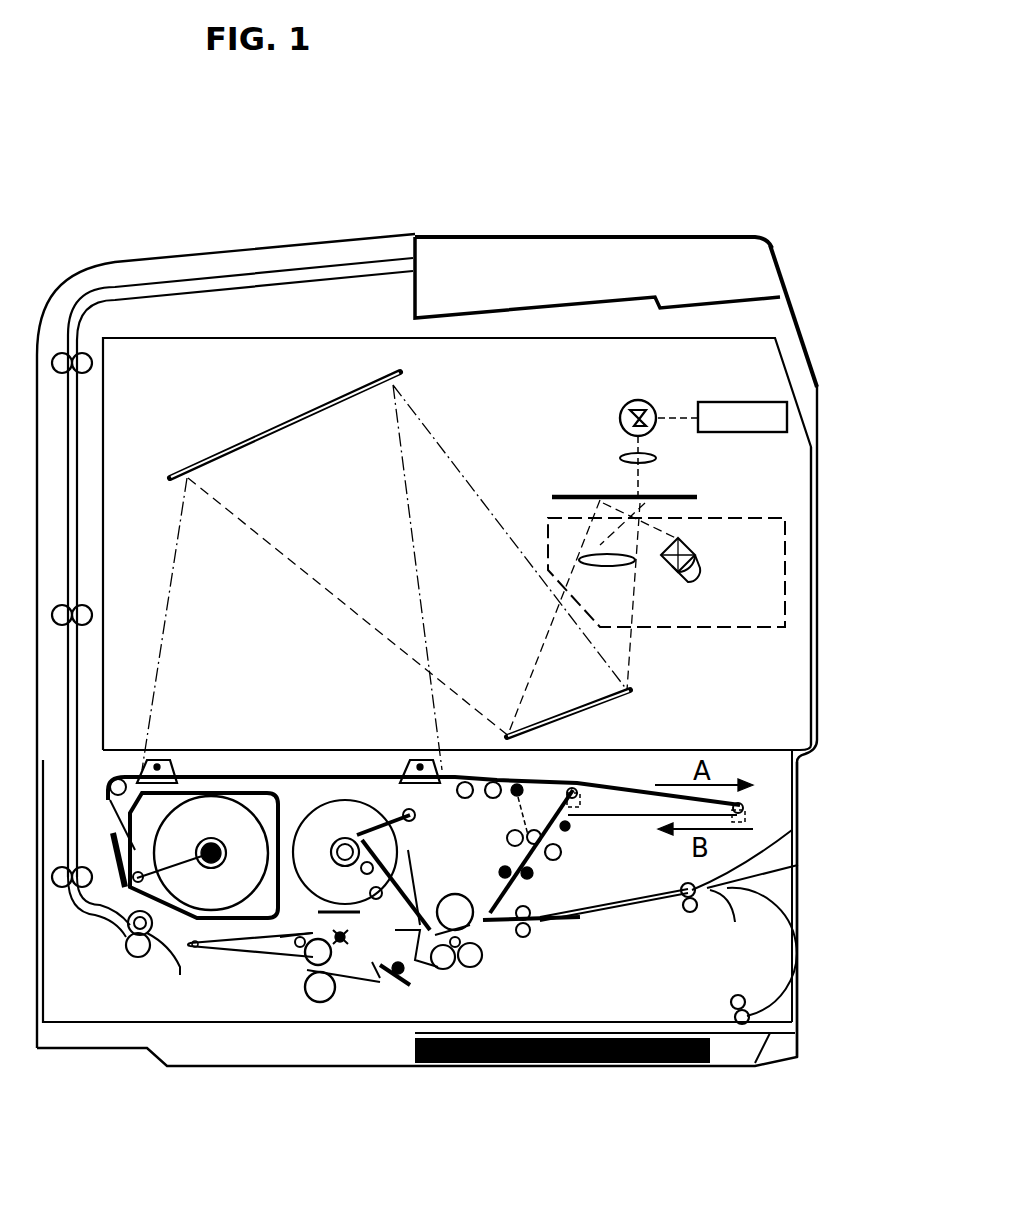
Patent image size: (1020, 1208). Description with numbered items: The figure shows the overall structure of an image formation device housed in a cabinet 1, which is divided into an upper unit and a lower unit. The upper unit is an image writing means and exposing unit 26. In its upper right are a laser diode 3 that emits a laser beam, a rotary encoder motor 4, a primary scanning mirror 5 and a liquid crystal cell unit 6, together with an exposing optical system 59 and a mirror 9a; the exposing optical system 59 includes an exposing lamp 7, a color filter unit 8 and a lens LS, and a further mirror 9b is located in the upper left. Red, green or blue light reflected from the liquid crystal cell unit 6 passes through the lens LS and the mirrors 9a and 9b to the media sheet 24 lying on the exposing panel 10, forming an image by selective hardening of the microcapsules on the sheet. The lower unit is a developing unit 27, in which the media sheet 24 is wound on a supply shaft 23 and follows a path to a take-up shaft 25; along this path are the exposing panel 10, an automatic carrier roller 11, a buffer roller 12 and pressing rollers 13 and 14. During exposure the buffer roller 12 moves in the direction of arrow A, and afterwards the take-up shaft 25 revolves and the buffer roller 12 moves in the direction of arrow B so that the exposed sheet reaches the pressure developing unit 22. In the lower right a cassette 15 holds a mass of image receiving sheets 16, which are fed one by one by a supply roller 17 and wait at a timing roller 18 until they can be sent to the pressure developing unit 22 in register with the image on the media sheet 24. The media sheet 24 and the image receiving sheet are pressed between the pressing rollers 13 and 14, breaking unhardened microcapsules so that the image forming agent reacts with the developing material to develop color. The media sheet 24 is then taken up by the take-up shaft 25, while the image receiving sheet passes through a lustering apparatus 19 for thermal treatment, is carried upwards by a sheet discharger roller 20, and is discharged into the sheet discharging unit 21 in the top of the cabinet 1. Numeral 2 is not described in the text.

The cabinet 1 is at (800, 316).
The laser light source 2 is at (757, 402).
The laser diode 3 is at (684, 412).
The rotary encoder motor 4 is at (634, 400).
The primary scanning mirror 5 is at (620, 418).
The liquid crystal cell unit 6 is at (690, 495).
The exposing lamp 7 is at (695, 572).
The color filter unit 8 is at (692, 553).
The mirror 9a is at (632, 691).
The mirror 9b is at (405, 372).
The exposing panel 10 is at (363, 770).
The automatic carrier roller 11 is at (532, 780).
The buffer roller 12 is at (577, 783).
The pressing roller 13 is at (455, 893).
The pressing roller 14 is at (470, 968).
The cassette 15 is at (443, 1066).
The image receiving sheets 16 is at (607, 1066).
The supply roller 17 is at (731, 1003).
The timing roller 18 is at (688, 912).
The lustering apparatus 19 is at (298, 988).
The sheet discharger roller 20 is at (138, 957).
The sheet discharging unit 21 is at (741, 253).
The pressure developing unit 22 is at (450, 975).
The supply shaft 23 is at (217, 838).
The media sheet 24 is at (210, 815).
The take-up shaft 25 is at (327, 765).
The exposing unit 26 is at (785, 465).
The developing unit 27 is at (774, 790).
The exposing optical system 59 is at (786, 583).
The lens LS is at (603, 568).